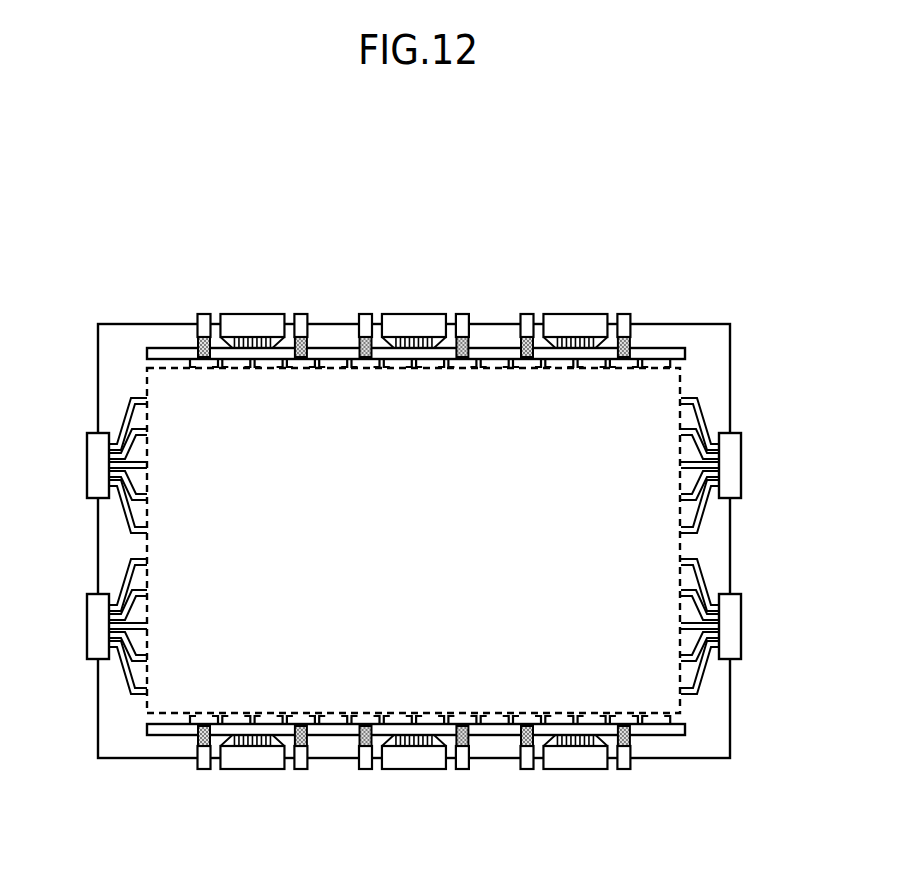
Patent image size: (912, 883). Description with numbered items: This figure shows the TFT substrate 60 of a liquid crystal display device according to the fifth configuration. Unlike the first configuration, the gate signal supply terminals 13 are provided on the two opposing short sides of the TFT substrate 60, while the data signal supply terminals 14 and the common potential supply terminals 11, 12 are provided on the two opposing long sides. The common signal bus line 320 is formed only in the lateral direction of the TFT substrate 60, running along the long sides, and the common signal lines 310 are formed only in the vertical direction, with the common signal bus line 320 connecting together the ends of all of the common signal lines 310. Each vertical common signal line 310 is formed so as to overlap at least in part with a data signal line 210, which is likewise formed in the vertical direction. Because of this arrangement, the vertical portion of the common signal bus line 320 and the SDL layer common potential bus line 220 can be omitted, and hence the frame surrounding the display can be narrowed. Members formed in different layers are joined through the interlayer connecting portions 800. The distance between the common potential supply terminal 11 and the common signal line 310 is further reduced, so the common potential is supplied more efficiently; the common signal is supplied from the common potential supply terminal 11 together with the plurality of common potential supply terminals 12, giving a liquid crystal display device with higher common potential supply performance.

The TFT substrate 60 is at (673, 787).
The common potential supply terminal 11 is at (204, 314).
The common potential supply terminals 12 is at (301, 314).
The gate signal supply terminal 13 is at (87, 468).
The data signal supply terminal 14 is at (277, 314).
The data signal lines 210 is at (664, 356).
The SDL layer common potential bus line 220 is at (687, 662).
The common signal lines 310 is at (647, 347).
The common signal bus line 320 is at (684, 349).
The interlayer connecting portion 800 is at (322, 346).